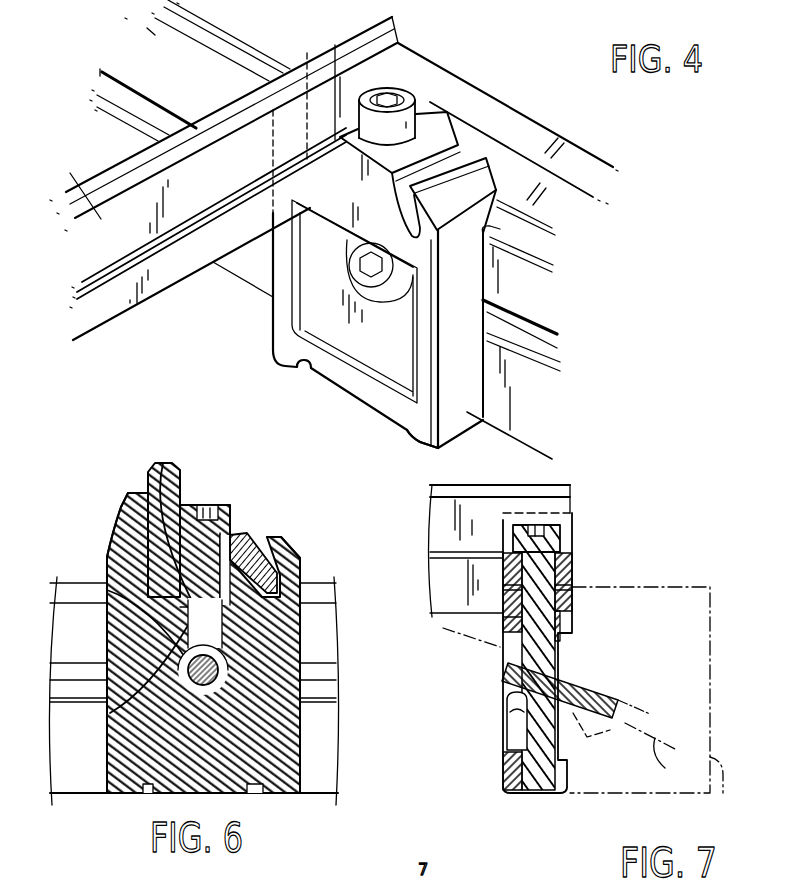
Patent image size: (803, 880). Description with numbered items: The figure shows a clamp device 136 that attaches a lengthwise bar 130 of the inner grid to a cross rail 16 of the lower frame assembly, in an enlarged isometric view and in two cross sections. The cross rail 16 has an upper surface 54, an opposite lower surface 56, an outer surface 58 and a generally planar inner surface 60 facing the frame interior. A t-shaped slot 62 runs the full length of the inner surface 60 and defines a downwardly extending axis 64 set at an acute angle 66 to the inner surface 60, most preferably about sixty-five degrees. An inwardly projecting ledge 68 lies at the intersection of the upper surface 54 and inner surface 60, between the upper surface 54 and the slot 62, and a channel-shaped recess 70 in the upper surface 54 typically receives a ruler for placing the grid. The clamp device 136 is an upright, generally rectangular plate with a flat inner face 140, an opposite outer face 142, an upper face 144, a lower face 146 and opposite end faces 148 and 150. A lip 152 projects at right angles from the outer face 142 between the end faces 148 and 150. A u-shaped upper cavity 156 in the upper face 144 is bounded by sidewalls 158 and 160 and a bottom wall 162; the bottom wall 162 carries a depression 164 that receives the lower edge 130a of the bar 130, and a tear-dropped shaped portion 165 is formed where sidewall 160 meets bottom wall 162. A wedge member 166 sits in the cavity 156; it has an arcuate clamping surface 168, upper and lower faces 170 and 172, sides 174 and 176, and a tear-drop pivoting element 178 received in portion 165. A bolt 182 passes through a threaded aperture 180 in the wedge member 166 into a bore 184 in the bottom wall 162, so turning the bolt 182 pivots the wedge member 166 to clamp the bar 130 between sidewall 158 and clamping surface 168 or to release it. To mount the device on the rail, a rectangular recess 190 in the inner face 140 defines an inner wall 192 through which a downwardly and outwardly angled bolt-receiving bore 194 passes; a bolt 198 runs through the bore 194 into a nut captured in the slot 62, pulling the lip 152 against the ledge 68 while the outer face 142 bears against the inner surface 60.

In FIG. 4, the cross rail 16 is at (582, 146).
In FIG. 7, the cross rail 16 is at (711, 586).
In FIG. 7, the upper surface 54 is at (642, 584).
In FIG. 7, the lower surface 56 is at (637, 806).
In FIG. 7, the outer surface 58 is at (719, 818).
In FIG. 4, the inner surface 60 is at (130, 127).
In FIG. 7, the inner surface 60 is at (505, 783).
In FIG. 7, the t-shaped slot 62 is at (618, 700).
In FIG. 7, the axis 64 is at (652, 753).
In FIG. 7, the acute angle 66 is at (495, 646).
In FIG. 4, the ledge 68 is at (150, 32).
In FIG. 7, the ledge 68 is at (570, 617).
In FIG. 4, the channel-shaped recess 70 is at (513, 167).
In FIG. 4, the lengthwise bar 130 is at (89, 196).
In FIG. 6, the lengthwise bar 130 is at (130, 520).
In FIG. 6, the lower edge 130a is at (107, 577).
In FIG. 4, the clamp device 136 is at (327, 383).
In FIG. 4, the inner face 140 is at (273, 338).
In FIG. 4, the outer face 142 is at (487, 363).
In FIG. 7, the outer face 142 is at (567, 795).
In FIG. 4, the upper face 144 is at (462, 147).
In FIG. 4, the lower face 146 is at (420, 447).
In FIG. 4, the end face 148 is at (273, 273).
In FIG. 4, the end face 150 is at (500, 418).
In FIG. 4, the lip 152 is at (503, 268).
In FIG. 6, the upper cavity 156 is at (258, 540).
In FIG. 6, the sidewall 158 is at (125, 493).
In FIG. 6, the sidewall 160 is at (283, 540).
In FIG. 6, the bottom wall 162 is at (243, 587).
In FIG. 6, the depression 164 is at (127, 527).
In FIG. 6, the tear-dropped shaped portion 165 is at (283, 580).
In FIG. 4, the wedge member 166 is at (330, 97).
In FIG. 6, the clamping surface 168 is at (163, 462).
In FIG. 6, the upper face 170 is at (257, 537).
In FIG. 6, the lower face 172 is at (263, 643).
In FIG. 4, the side 174 is at (350, 167).
In FIG. 4, the side 176 is at (433, 110).
In FIG. 4, the pivoting element 178 is at (437, 270).
In FIG. 6, the threaded aperture 180 is at (170, 603).
In FIG. 6, the bolt 182 is at (190, 507).
In FIG. 6, the bore 184 is at (110, 714).
In FIG. 4, the rectangular recess 190 is at (357, 353).
In FIG. 7, the inner wall 192 is at (507, 727).
In FIG. 7, the bolt-receiving bore 194 is at (503, 700).
In FIG. 7, the bolt 198 is at (595, 685).